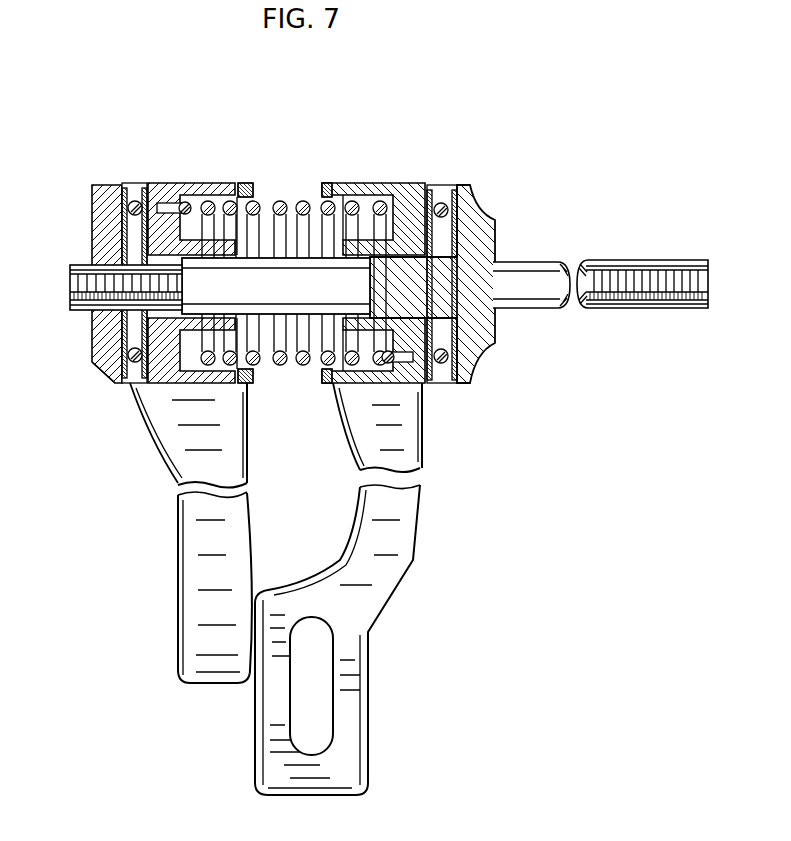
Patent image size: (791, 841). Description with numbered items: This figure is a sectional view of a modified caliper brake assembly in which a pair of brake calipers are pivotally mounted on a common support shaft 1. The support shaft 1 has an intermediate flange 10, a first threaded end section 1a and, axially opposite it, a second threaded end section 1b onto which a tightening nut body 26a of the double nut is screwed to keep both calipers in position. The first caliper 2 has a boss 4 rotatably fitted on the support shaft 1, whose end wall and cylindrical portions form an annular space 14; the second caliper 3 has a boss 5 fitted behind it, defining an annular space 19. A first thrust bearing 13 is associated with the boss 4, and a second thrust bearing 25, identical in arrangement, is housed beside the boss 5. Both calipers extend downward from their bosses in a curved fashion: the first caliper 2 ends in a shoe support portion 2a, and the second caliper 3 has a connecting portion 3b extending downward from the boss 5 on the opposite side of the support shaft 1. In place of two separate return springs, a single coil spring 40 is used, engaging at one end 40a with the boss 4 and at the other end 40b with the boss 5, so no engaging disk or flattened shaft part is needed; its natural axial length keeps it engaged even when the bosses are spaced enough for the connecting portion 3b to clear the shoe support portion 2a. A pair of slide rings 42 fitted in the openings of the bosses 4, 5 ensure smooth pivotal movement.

The support shaft 1 is at (548, 262).
The first threaded end section 1a is at (633, 260).
The second threaded end section 1b is at (76, 282).
The first caliper 2 is at (423, 510).
The shoe support portion 2a is at (355, 667).
The second caliper 3 is at (165, 460).
The connecting portion 3b is at (185, 624).
The boss 4 is at (380, 247).
The boss 5 is at (163, 181).
The intermediate flange 10 is at (480, 208).
The first thrust bearing 13 is at (457, 200).
The annular space 14 is at (372, 181).
The annular space 19 is at (222, 181).
The second thrust bearing 25 is at (118, 226).
The tightening nut body 26a is at (105, 368).
The single coil spring 40 is at (284, 201).
The one end of coil spring 40a is at (385, 390).
The other end of coil spring 40b is at (170, 205).
The slide rings 42 is at (251, 183).